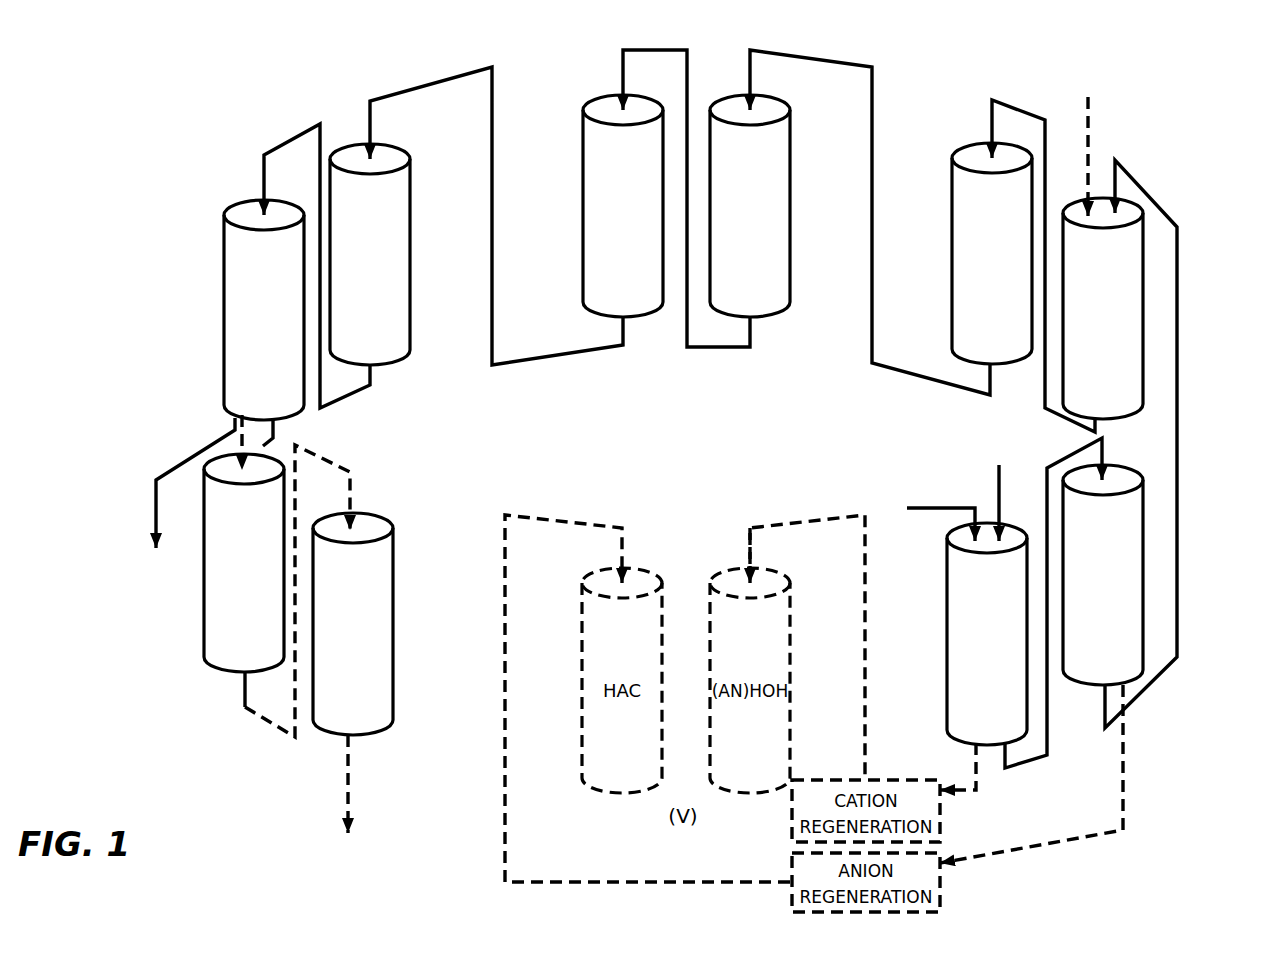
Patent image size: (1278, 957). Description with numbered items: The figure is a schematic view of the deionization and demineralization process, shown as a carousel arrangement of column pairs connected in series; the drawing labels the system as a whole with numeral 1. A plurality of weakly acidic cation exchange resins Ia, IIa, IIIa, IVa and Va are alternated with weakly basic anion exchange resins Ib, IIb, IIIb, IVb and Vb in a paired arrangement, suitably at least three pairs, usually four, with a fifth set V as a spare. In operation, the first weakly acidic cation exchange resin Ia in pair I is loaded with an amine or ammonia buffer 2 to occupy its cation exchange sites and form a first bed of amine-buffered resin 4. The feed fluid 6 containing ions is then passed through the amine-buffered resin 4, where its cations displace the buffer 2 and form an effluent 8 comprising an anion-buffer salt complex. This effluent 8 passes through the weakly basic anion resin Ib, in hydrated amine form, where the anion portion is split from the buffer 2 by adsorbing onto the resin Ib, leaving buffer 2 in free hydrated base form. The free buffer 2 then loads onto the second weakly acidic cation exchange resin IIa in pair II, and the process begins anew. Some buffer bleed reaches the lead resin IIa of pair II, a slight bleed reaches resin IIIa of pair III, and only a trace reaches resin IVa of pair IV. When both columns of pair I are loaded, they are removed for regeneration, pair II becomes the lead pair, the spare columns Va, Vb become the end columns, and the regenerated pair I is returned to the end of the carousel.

The deionization process system 1 is at (261, 449).
The buffer 2 is at (887, 490).
The amine-buffered resin 4 is at (973, 603).
The feed fluid 6 is at (997, 470).
The effluent 8 is at (1040, 760).
The pair I is at (1052, 486).
The weakly acidic cation exchange resin Ia is at (963, 713).
The weakly basic anion resin Ib is at (1130, 605).
The pair II is at (1056, 266).
The second weakly acidic cation exchange resin IIa is at (1130, 377).
The weakly basic anion exchange resin IIb is at (983, 333).
The pair III is at (751, 222).
The weakly acidic cation exchange resin IIIa is at (767, 267).
The weakly basic anion exchange resin IIIb is at (605, 272).
The pair IV is at (386, 260).
The weakly acidic cation exchange resin IVa is at (383, 325).
The weakly basic anion exchange resin IVb is at (242, 276).
The fifth set V is at (247, 639).
The weakly acidic cation exchange resin Va is at (222, 640).
The weakly basic anion exchange resin Vb is at (377, 700).